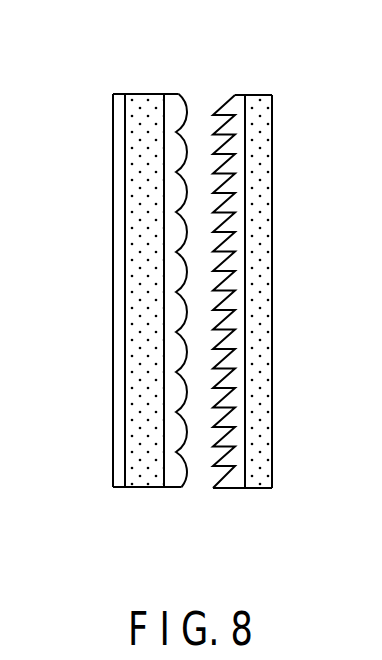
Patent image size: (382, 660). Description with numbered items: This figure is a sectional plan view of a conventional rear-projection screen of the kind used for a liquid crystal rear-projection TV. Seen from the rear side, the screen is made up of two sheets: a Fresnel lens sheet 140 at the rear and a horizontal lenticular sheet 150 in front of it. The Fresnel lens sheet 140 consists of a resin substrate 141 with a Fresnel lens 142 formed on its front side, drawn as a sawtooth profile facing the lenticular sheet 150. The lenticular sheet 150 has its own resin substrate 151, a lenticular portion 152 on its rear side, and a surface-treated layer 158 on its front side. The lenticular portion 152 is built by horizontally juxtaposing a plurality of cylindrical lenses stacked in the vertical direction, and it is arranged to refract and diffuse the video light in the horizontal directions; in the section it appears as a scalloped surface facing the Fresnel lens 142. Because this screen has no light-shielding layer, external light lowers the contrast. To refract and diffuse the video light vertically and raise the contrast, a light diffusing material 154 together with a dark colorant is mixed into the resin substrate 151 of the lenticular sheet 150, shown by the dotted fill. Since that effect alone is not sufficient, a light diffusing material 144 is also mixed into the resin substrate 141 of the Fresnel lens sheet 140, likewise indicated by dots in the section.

The lenticular sheet 150 is at (154, 71).
The surface-treated layer 158 is at (118, 422).
The resin substrate 151 is at (122, 486).
The light diffusing material 154 is at (138, 476).
The lenticular portion 152 is at (183, 480).
The Fresnel lens sheet 140 is at (266, 71).
The Fresnel lens 142 is at (232, 477).
The light diffusing material 144 is at (256, 465).
The resin substrate 141 is at (258, 485).